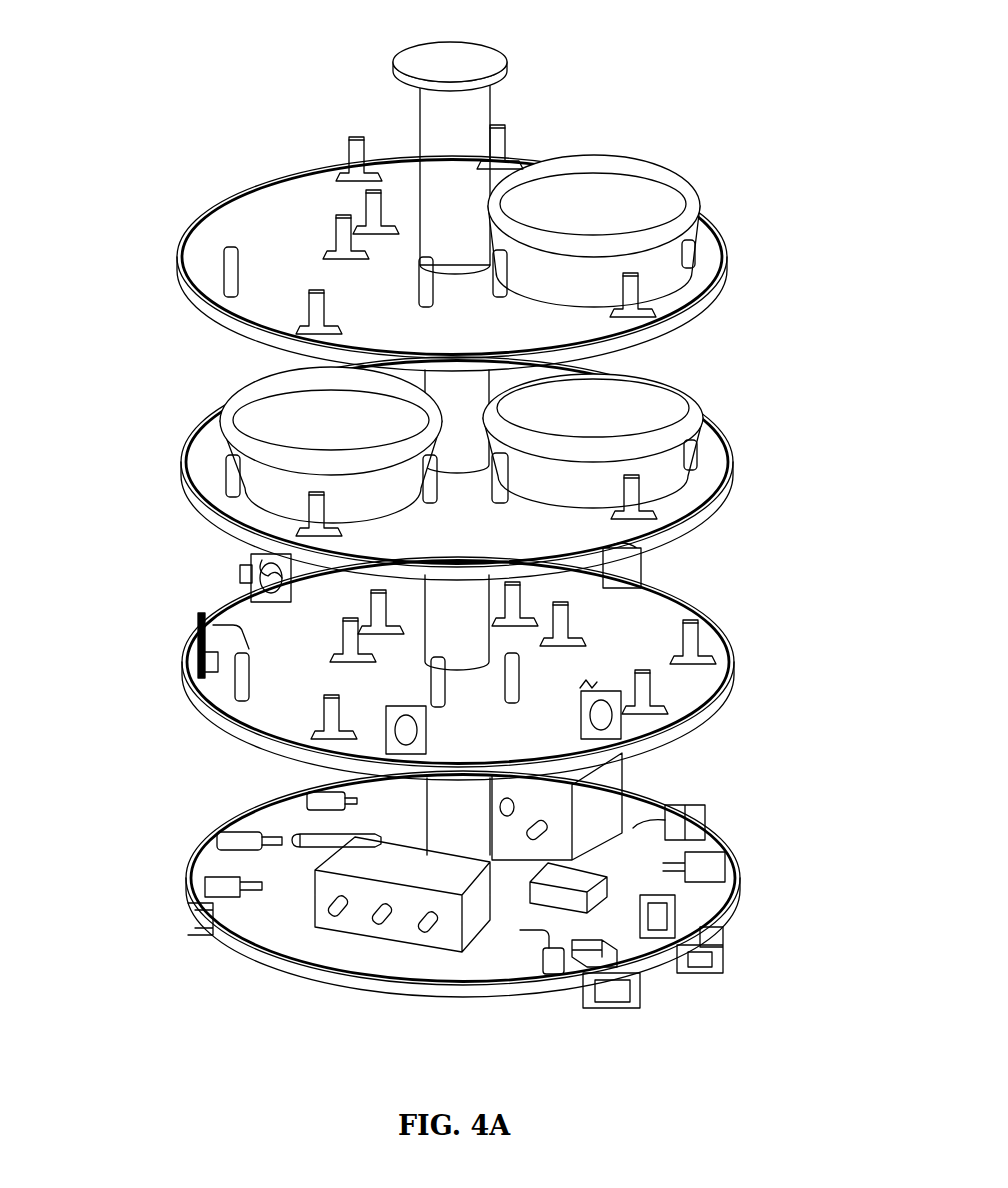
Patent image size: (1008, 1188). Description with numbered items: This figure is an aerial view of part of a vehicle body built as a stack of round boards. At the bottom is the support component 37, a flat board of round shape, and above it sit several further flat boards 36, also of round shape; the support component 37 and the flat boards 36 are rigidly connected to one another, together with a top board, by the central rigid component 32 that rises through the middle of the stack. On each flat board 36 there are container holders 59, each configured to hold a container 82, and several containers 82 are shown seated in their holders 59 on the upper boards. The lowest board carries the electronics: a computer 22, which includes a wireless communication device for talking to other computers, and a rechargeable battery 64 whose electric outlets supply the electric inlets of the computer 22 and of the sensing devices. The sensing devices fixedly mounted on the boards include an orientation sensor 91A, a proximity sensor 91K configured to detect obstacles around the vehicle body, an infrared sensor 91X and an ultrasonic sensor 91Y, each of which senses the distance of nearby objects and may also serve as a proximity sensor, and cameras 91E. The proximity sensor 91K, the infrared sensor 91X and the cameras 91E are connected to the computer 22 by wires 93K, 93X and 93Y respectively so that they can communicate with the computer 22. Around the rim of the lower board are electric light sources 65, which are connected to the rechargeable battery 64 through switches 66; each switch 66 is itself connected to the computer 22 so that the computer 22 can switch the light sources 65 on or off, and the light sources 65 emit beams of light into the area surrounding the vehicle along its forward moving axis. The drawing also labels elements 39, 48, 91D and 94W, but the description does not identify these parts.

The computer 22 is at (609, 792).
The rigid component 32 is at (448, 192).
The flat boards 36 is at (500, 327).
The support component 37 is at (373, 958).
The plate 39 is at (203, 623).
The rim lip 48 is at (683, 308).
The container holders 59 is at (222, 265).
The rechargeable battery 64 is at (377, 865).
The electric light sources 65 is at (187, 930).
The switches 66 is at (218, 837).
The container 82 is at (627, 230).
The orientation sensor 91A is at (560, 897).
The connector clamp 91D is at (243, 573).
The cameras 91E is at (665, 917).
The proximity sensor 91K is at (700, 818).
The infrared sensor 91X is at (550, 968).
The ultrasonic sensor 91Y is at (720, 870).
The wire 93K is at (660, 822).
The wire 93X is at (538, 935).
The wire 93Y is at (257, 557).
The wire 94W is at (203, 878).